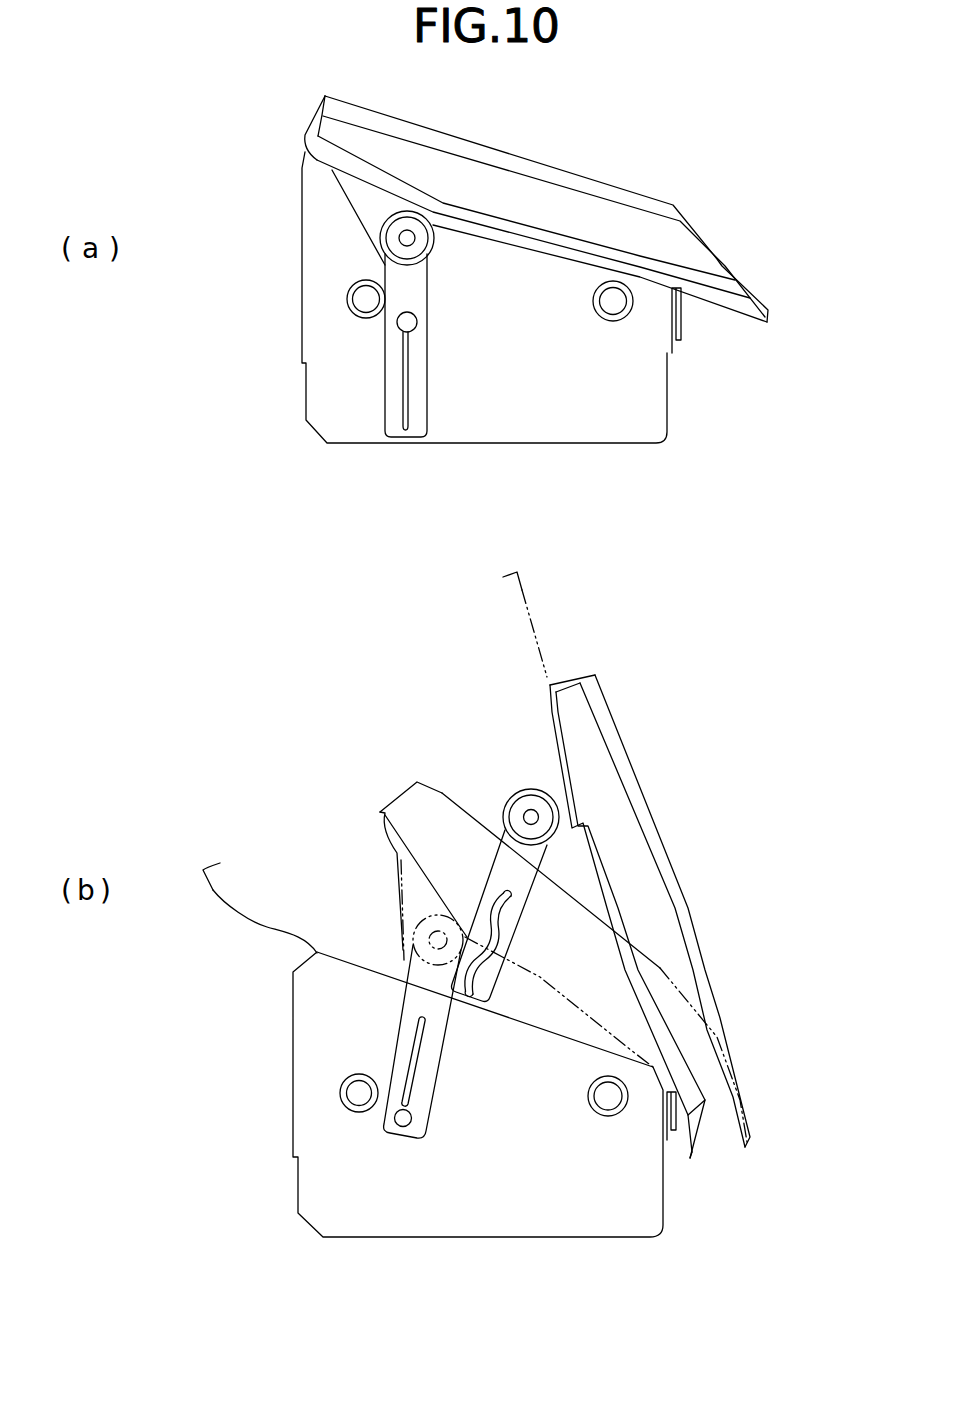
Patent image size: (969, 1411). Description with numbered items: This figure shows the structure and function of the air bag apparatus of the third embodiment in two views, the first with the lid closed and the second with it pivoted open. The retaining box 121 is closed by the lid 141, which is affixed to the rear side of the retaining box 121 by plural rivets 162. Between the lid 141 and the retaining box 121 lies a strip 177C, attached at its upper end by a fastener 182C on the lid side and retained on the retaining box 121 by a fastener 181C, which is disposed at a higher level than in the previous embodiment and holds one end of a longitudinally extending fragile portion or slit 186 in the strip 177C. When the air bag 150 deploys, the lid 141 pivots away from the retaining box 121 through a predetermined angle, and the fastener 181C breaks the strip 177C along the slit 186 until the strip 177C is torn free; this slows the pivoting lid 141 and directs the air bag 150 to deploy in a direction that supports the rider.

The retaining box 121 is at (648, 405).
The lid 141 is at (600, 210).
The air bag 150 is at (530, 596).
The rivets 162 is at (366, 299).
The strip 177C is at (388, 403).
The fastener 181C is at (400, 326).
The fastener 182C is at (407, 238).
The slit 186 is at (407, 372).